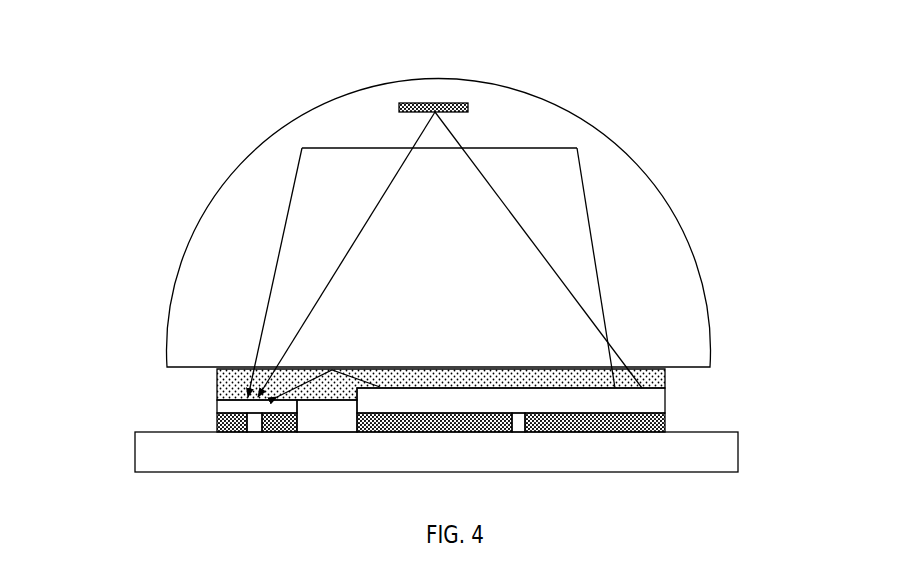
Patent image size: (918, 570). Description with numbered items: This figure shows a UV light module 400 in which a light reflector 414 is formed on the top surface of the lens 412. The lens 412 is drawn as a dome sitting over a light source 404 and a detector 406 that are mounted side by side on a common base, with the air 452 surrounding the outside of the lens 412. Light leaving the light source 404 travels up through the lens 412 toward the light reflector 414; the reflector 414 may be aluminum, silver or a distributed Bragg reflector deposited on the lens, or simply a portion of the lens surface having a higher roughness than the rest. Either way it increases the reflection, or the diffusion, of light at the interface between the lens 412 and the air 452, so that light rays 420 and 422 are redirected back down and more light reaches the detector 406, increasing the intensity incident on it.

The UV light module 400 is at (66, 102).
The light source 404 is at (665, 403).
The detector 406 is at (215, 412).
The lens 412 is at (201, 279).
The light reflector 414 is at (436, 103).
The light ray 420 is at (358, 235).
The light ray 422 is at (600, 263).
The air 452 is at (712, 198).